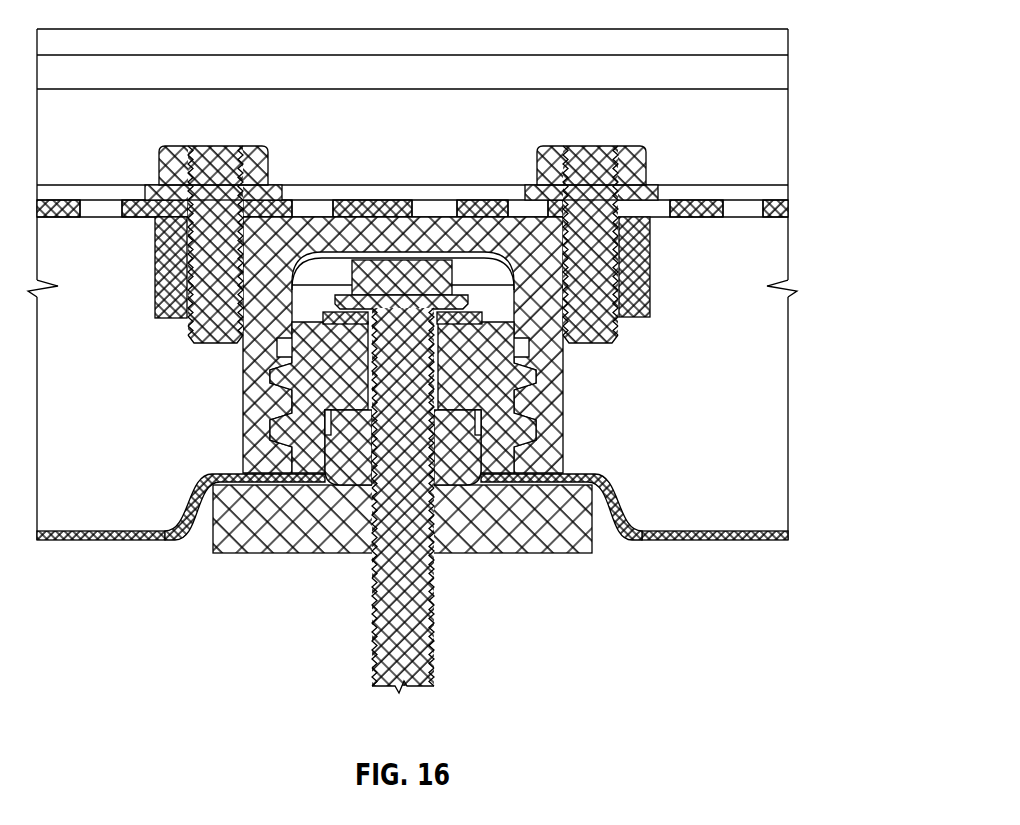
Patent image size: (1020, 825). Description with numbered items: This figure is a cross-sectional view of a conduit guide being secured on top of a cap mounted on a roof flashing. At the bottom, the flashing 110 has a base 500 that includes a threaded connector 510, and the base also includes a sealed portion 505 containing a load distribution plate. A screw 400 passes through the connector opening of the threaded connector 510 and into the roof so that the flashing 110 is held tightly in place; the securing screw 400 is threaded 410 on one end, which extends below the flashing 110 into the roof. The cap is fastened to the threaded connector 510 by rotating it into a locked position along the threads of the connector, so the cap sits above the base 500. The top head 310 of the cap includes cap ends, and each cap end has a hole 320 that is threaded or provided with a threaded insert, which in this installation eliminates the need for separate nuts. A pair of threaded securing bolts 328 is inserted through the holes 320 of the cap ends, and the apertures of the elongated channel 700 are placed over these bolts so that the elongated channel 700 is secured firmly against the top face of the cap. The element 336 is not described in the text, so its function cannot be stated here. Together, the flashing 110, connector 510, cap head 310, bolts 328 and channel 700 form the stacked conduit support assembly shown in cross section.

The elongated channel 700 is at (771, 127).
The flashing 110 is at (77, 543).
The base 500 is at (193, 520).
The sealed portion 505 is at (558, 543).
The threaded connector 510 is at (552, 434).
The threaded end 410 is at (433, 645).
The screw 400 is at (298, 283).
The spacer block 336 is at (212, 273).
The top head 310 is at (632, 298).
The hole 320 is at (617, 218).
The securing bolt 328 is at (602, 247).